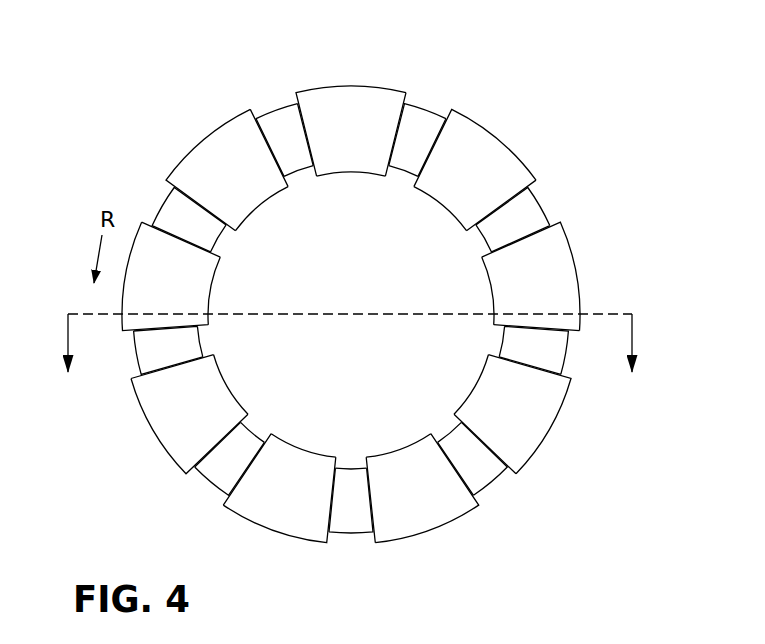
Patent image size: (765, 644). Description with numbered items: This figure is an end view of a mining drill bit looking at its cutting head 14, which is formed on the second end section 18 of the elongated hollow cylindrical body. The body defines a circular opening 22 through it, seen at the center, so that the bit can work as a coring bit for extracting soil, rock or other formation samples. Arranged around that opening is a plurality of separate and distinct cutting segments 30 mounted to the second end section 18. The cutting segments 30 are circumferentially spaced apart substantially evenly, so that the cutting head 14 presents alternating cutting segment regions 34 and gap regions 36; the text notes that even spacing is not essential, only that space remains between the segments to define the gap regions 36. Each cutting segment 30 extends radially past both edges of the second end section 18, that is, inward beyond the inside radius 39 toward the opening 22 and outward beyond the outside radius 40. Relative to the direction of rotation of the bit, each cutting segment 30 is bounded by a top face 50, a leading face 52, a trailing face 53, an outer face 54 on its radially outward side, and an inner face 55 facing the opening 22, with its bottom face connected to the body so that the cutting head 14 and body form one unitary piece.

The cutting head 14 is at (277, 97).
The second end section 18 is at (162, 198).
The opening 22 is at (259, 232).
The cutting segment 30 is at (523, 453).
The cutting segment region 34 is at (135, 205).
The gap region 36 is at (428, 105).
The inside radius 39 is at (297, 173).
The outside radius 40 is at (317, 319).
The top face 50 is at (492, 150).
The leading face 52 is at (566, 288).
The trailing face 53 is at (560, 334).
The outer face 54 is at (351, 131).
The inner face 55 is at (372, 178).